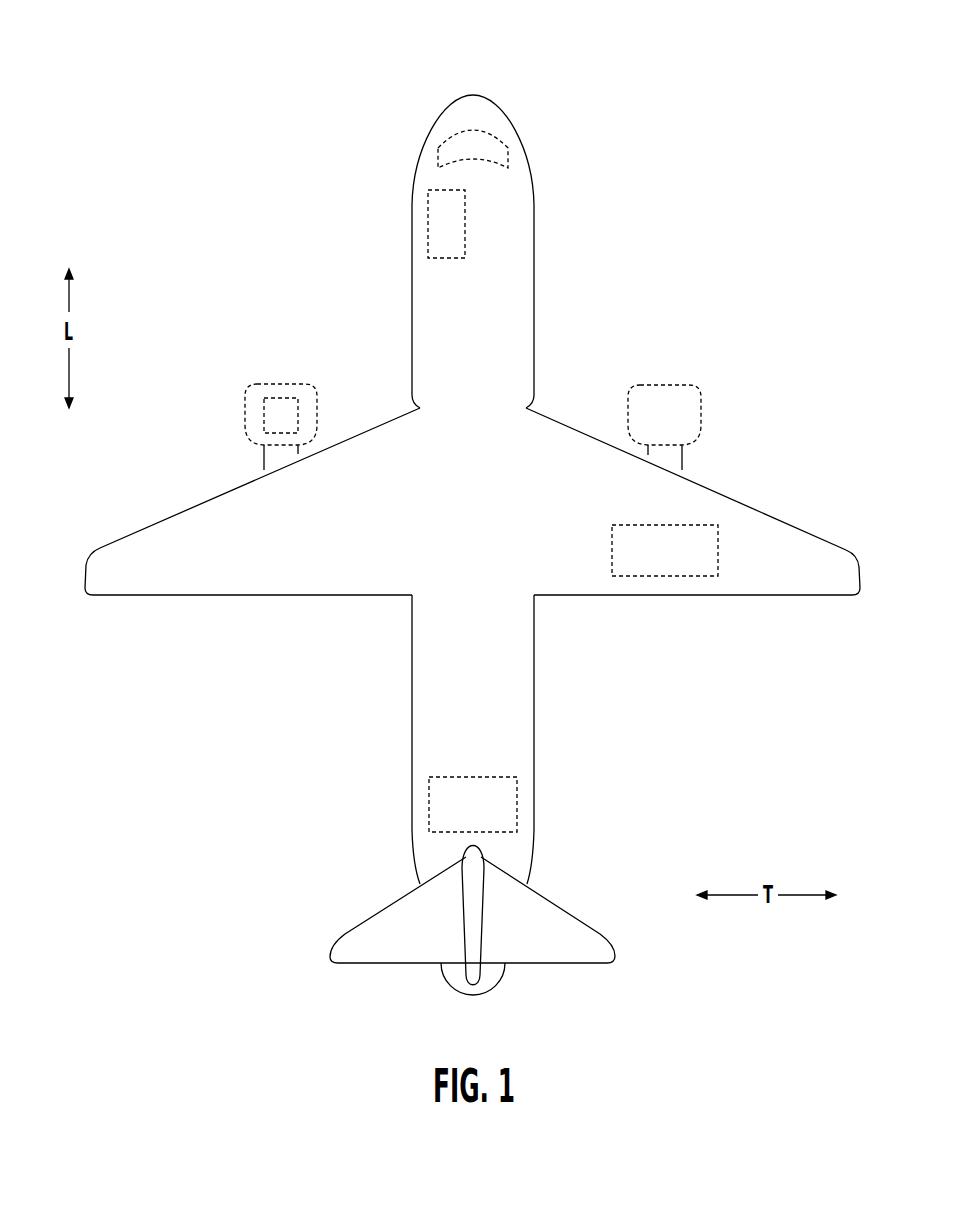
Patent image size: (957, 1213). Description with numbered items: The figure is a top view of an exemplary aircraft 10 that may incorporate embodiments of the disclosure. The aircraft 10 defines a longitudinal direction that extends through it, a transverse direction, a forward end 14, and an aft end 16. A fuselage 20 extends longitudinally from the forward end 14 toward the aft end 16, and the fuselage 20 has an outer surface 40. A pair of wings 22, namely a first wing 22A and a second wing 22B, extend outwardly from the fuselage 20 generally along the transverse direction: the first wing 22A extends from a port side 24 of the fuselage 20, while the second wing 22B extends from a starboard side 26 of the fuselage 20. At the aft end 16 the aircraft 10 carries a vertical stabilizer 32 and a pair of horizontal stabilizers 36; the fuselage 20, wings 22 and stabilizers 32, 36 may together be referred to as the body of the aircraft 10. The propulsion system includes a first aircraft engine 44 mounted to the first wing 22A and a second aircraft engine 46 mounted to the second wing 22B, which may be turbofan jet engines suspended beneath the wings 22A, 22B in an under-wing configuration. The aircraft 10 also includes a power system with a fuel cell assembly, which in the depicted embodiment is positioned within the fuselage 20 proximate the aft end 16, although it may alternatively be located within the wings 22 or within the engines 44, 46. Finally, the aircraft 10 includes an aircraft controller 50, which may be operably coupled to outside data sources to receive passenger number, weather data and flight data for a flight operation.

The aircraft 10 is at (670, 118).
The forward end 14 is at (526, 86).
The aft end 16 is at (383, 1002).
The fuselage 20 is at (536, 313).
The pair of wings 22 is at (252, 530).
The first wing 22A is at (232, 570).
The second wing 22B is at (805, 552).
The port side 24 is at (280, 254).
The starboard side 26 is at (748, 300).
The vertical stabilizer 32 is at (472, 916).
The horizontal stabilizers 36 is at (590, 943).
The outer surface 40 is at (536, 700).
The first aircraft engine 44 is at (310, 396).
The second aircraft engine 46 is at (693, 413).
The aircraft controller 50 is at (437, 229).